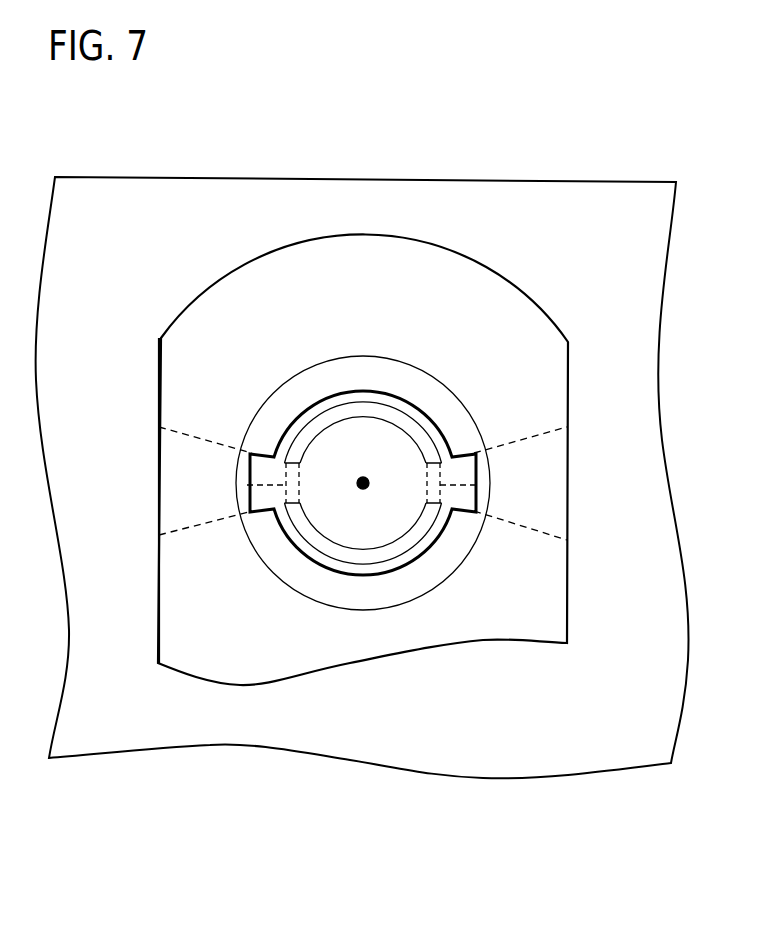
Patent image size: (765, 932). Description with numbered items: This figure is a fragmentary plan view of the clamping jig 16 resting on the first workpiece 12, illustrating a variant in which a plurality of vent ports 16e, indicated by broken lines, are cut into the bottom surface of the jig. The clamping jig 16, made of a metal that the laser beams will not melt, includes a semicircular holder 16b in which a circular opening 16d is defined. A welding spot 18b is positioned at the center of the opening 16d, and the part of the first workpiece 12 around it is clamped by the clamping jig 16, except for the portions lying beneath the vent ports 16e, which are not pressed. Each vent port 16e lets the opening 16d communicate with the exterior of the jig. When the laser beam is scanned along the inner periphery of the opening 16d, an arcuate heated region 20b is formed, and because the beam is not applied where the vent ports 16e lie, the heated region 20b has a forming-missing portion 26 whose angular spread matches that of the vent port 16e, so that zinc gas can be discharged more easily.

The first workpiece 12 is at (598, 197).
The clamping jig 16 is at (176, 313).
The holder 16b is at (172, 375).
The opening 16d is at (265, 418).
The vent port 16e is at (175, 530).
The welding spot 18b is at (366, 478).
The heated region 20b is at (310, 433).
The forming-missing portion 26 is at (247, 486).